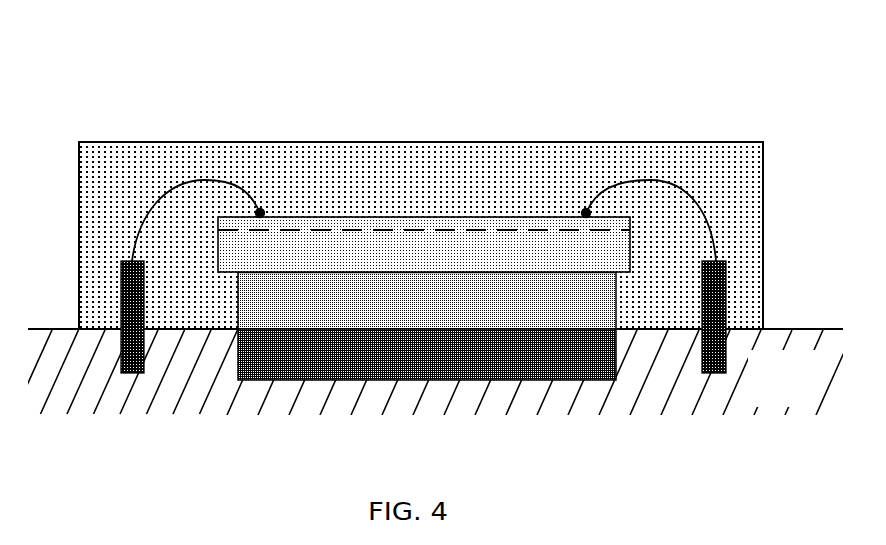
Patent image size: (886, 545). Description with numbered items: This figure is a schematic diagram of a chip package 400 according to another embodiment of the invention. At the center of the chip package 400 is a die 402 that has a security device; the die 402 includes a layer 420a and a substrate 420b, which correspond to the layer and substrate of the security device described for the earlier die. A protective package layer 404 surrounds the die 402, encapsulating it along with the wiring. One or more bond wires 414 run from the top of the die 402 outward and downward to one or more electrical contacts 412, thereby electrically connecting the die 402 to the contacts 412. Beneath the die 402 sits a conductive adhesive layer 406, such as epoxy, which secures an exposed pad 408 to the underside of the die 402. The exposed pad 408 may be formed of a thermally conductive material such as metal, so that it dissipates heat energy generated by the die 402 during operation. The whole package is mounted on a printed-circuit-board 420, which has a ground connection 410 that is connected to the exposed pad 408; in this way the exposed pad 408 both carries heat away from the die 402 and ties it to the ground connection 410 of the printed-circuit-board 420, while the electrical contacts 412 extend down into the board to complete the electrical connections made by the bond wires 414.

The chip package 400 is at (434, 244).
The die 402 is at (424, 181).
The protective package layer 404 is at (340, 153).
The conductive adhesive layer 406 is at (408, 276).
The exposed pad 408 is at (607, 302).
The ground connection 410 is at (483, 365).
The electrical contact 412 is at (133, 373).
The bond wires 414 is at (205, 181).
The printed-circuit-board 420 is at (797, 396).
The layer 420a is at (472, 227).
The substrate 420b is at (543, 252).